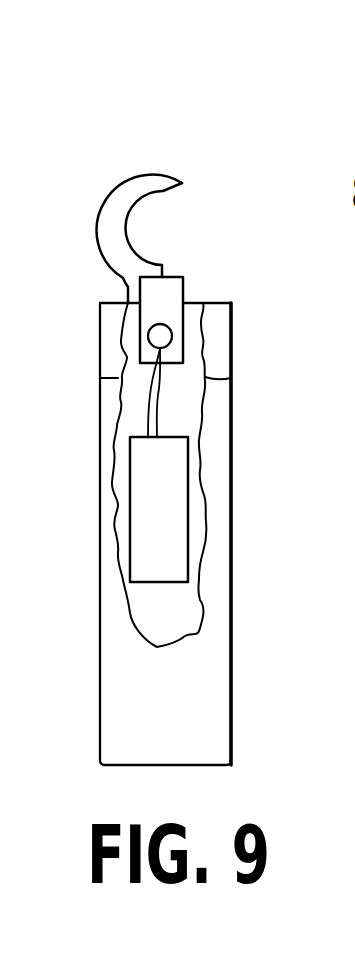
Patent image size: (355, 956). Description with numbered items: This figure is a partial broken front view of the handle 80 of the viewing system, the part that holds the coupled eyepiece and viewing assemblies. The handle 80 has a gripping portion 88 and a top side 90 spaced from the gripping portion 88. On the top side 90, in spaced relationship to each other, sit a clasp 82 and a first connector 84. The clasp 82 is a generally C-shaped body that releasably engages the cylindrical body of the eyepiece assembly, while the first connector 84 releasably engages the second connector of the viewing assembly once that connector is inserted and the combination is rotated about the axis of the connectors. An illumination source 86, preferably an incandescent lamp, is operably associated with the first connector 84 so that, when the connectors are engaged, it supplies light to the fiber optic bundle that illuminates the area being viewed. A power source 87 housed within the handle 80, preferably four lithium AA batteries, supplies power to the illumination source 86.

The handle 80 is at (222, 411).
The clasp 82 is at (123, 203).
The first connector 84 is at (168, 292).
The illumination source 86 is at (160, 338).
The power source 87 is at (163, 533).
The gripping portion 88 is at (210, 600).
The top side 90 is at (204, 310).